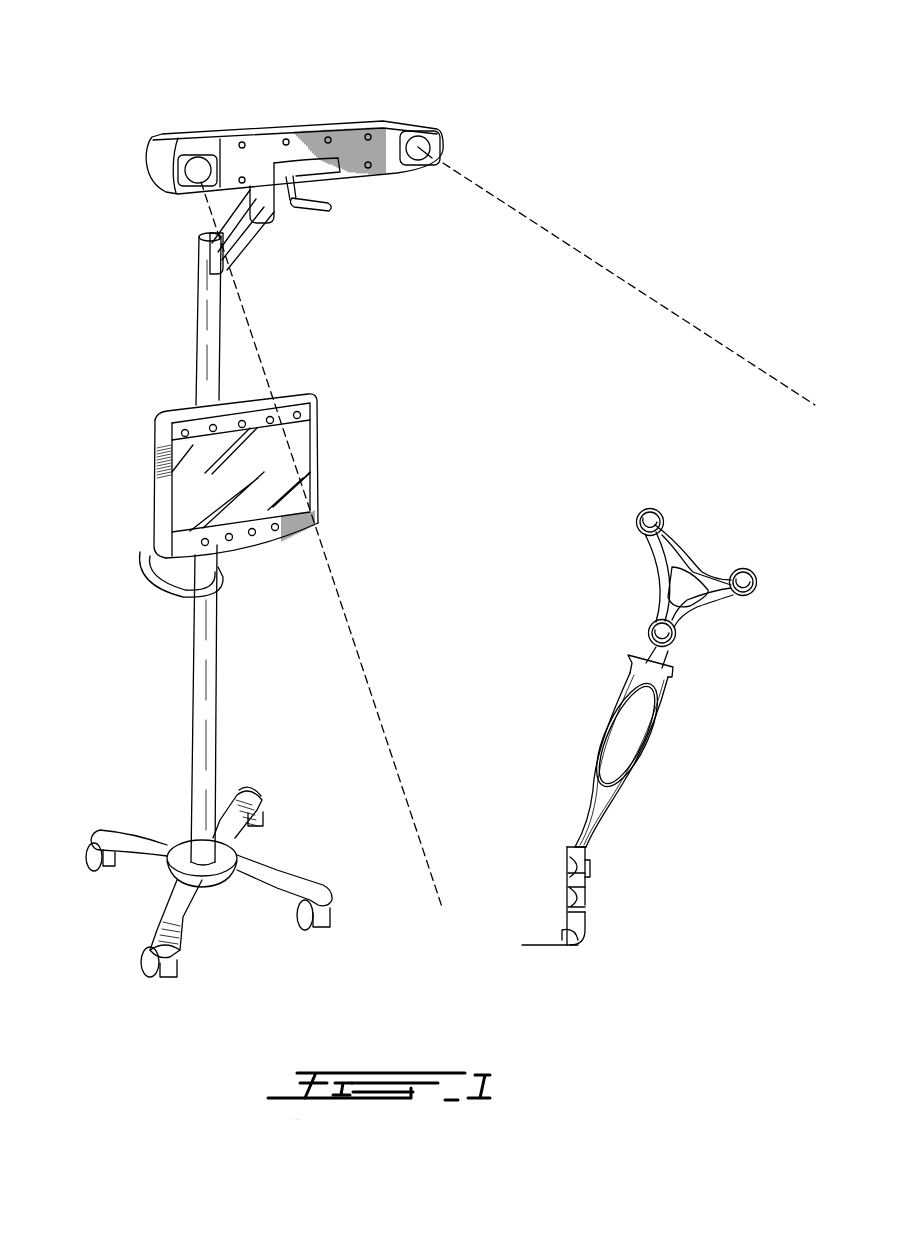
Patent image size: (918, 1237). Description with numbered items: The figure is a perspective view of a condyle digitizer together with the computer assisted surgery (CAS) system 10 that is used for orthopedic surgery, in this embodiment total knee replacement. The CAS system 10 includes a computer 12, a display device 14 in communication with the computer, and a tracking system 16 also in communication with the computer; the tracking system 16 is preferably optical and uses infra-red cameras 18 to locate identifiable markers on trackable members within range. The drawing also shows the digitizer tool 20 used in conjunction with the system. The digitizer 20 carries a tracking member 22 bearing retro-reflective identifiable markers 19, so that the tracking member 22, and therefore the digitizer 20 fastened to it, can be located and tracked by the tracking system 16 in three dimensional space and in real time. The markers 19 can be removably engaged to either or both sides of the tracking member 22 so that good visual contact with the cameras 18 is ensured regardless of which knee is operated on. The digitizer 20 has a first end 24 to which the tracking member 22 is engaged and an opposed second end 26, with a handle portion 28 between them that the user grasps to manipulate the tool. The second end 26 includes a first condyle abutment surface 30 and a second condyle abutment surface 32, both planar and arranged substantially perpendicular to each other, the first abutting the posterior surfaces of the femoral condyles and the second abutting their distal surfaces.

The computer assisted surgery (CAS) system 10 is at (352, 319).
The computer 12 is at (168, 498).
The display device 14 is at (303, 443).
The tracking system 16 is at (335, 118).
The infra-red cameras 18 is at (198, 172).
The retro-reflective identifiable markers 19 is at (641, 535).
The digitizer tool 20 is at (754, 516).
The tracking member 22 is at (698, 573).
The first end 24 is at (625, 714).
The second end 26 is at (595, 890).
The handle portion 28 is at (648, 745).
The first condyle abutment surface 30 is at (547, 942).
The second condyle abutment surface 32 is at (565, 858).